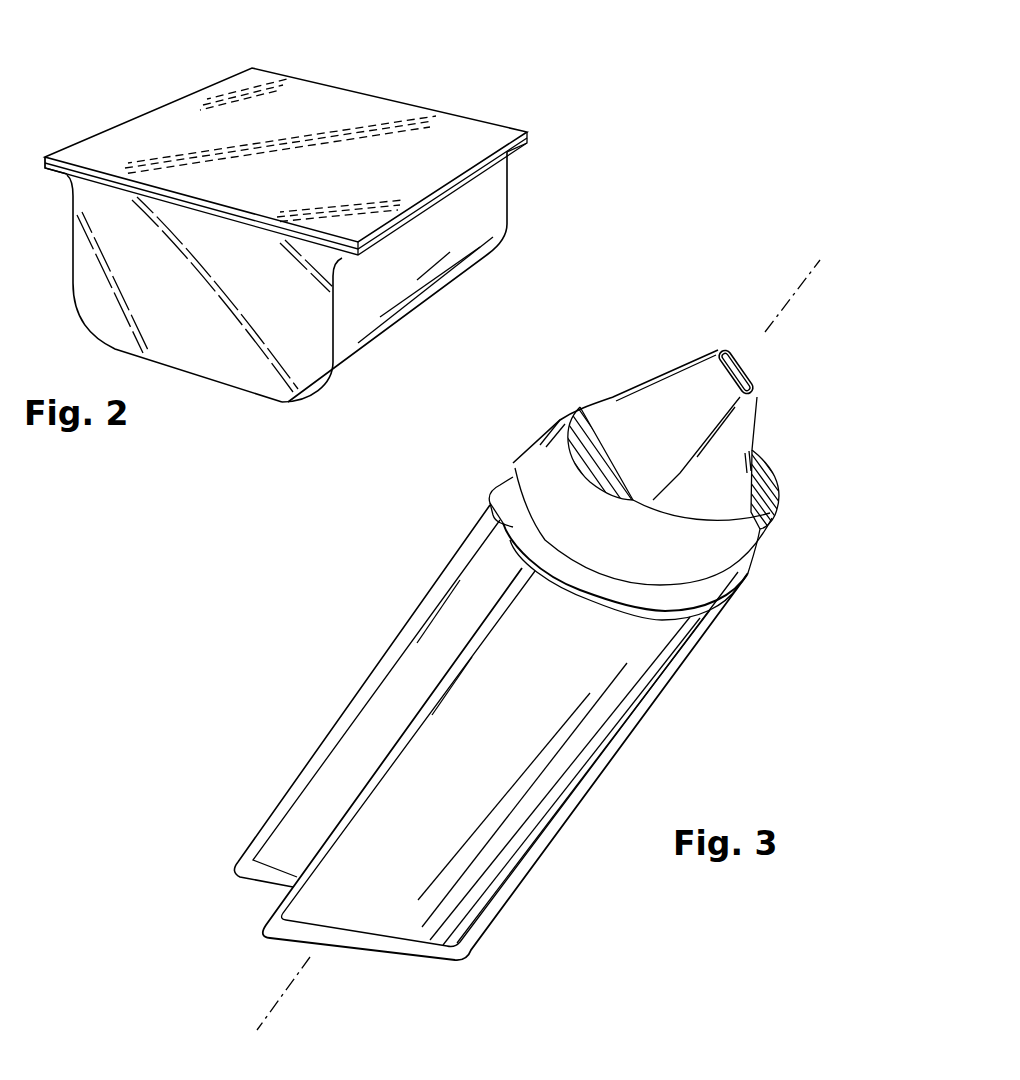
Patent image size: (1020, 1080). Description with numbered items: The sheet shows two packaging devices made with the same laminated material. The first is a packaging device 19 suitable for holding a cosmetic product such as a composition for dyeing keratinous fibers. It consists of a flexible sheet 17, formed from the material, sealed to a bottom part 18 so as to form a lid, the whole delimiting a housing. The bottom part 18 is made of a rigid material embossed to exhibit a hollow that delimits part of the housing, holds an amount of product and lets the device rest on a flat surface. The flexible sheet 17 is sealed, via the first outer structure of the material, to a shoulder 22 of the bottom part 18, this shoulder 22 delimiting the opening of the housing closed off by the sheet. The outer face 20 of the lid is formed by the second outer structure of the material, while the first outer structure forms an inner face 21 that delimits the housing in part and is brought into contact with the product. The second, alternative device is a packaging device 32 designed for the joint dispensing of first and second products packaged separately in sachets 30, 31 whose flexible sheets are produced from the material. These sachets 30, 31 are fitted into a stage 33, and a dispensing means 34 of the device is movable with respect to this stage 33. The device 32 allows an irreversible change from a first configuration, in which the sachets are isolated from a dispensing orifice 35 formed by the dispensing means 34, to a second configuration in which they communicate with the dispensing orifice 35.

In FIG. 2, the flexible sheet 17 is at (486, 162).
In FIG. 2, the bottom part 18 is at (240, 362).
In FIG. 2, the packaging device 19 is at (206, 229).
In FIG. 2, the outer face 20 is at (437, 147).
In FIG. 2, the inner face 21 is at (275, 125).
In FIG. 2, the shoulder 22 is at (50, 176).
In FIG. 3, the sachet 30 is at (422, 768).
In FIG. 3, the sachet 31 is at (315, 815).
In FIG. 3, the packaging device 32 is at (538, 645).
In FIG. 3, the stage 33 is at (740, 590).
In FIG. 3, the dispensing means 34 is at (648, 374).
In FIG. 3, the dispensing orifice 35 is at (753, 381).